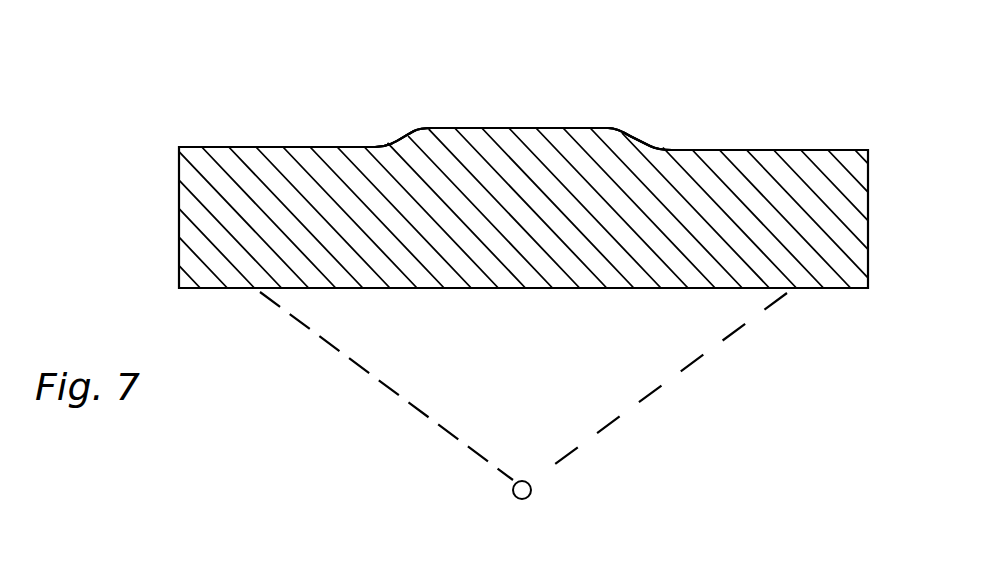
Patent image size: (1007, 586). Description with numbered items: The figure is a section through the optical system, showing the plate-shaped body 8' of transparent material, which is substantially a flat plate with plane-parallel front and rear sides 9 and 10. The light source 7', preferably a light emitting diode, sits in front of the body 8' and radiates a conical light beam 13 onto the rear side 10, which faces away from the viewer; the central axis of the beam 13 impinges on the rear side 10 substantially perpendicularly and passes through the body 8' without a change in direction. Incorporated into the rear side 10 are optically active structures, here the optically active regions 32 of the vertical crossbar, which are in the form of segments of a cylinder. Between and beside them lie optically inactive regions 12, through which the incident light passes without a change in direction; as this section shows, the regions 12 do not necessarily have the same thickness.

The light source 7' is at (550, 500).
The plate-shaped body 8' is at (550, 208).
The front side 9 is at (672, 292).
The rear side 10 is at (791, 149).
The optically inactive regions 12 is at (751, 149).
The conical light beam 13 is at (660, 390).
The optically active regions 32 is at (647, 135).